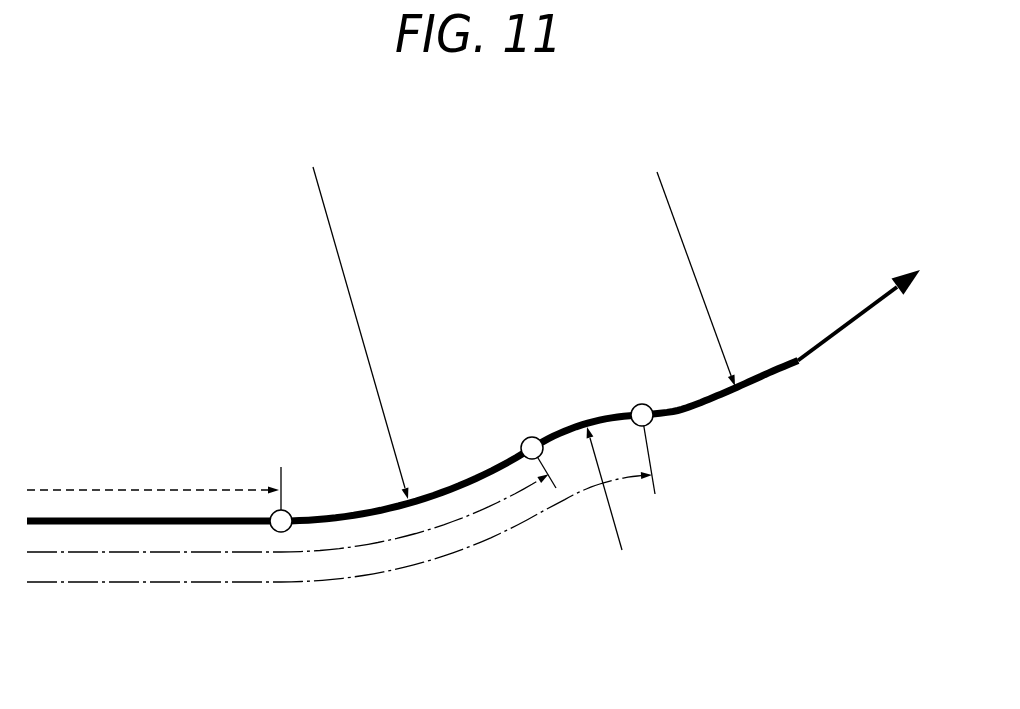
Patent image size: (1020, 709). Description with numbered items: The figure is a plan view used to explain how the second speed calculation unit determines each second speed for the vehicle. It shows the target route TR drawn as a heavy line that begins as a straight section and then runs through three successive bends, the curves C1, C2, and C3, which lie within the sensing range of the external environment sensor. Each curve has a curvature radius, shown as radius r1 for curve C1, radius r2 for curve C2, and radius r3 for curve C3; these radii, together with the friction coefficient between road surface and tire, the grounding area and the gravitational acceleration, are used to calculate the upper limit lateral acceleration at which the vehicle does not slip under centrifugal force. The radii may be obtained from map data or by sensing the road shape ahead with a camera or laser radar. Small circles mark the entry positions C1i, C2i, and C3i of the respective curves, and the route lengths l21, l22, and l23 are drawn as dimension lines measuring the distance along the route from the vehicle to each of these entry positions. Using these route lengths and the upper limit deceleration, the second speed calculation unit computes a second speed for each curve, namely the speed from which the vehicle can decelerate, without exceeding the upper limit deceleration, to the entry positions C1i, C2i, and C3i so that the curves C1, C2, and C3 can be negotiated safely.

The target route TR is at (853, 321).
The curve C1 is at (360, 511).
The curve C2 is at (602, 417).
The curve C3 is at (753, 392).
The entry position of curve C1 C1i is at (274, 513).
The entry position of curve C2 C2i is at (528, 437).
The entry position of curve C3 C3i is at (652, 422).
The curvature radius r1 is at (347, 275).
The curvature radius r2 is at (613, 528).
The curvature radius r3 is at (676, 223).
The route length l21 is at (157, 488).
The route length l22 is at (115, 553).
The route length l23 is at (233, 584).